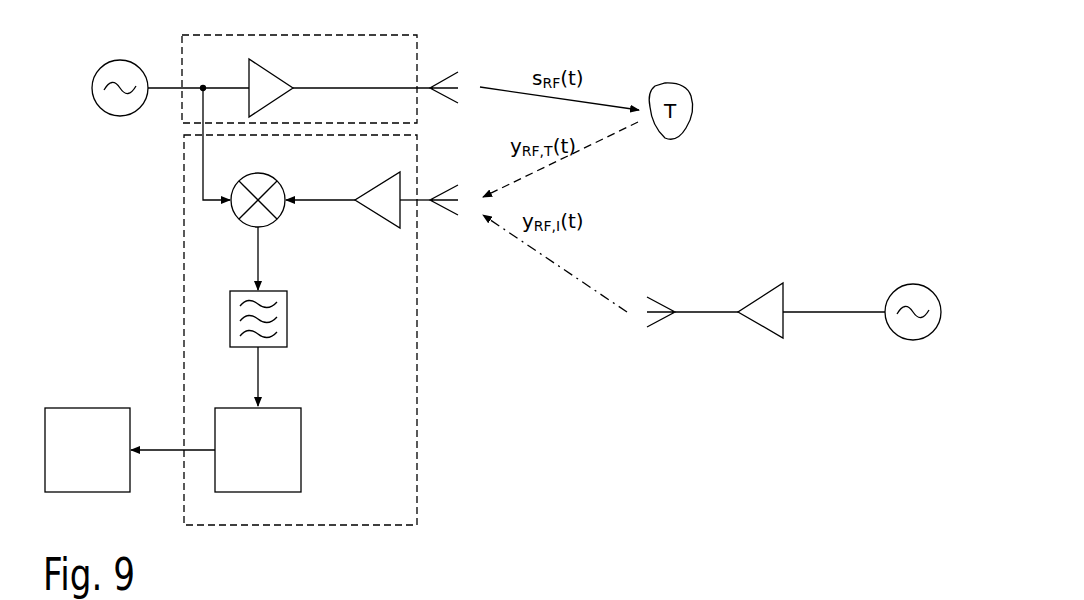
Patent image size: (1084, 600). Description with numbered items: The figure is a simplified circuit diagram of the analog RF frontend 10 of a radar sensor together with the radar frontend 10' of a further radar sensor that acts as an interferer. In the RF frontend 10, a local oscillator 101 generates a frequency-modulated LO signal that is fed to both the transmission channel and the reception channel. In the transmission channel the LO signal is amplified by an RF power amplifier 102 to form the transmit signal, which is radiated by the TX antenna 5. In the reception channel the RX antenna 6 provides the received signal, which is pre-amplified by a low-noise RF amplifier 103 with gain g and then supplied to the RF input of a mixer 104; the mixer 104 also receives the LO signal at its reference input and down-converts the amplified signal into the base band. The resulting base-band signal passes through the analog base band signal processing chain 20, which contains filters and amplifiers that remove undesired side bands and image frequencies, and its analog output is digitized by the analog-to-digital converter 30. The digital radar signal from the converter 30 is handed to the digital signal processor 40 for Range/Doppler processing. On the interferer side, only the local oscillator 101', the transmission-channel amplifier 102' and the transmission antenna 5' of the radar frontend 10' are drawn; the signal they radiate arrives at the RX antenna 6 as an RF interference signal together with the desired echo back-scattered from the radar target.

The RF frontend 10 is at (251, 268).
The local oscillator 101 is at (120, 67).
The RF power amplifier 102 is at (295, 80).
The TX antenna 5 is at (444, 63).
The mixer 104 is at (276, 177).
The RF amplifier 103 is at (389, 222).
The RX antenna 6 is at (447, 190).
The analog base band signal processing chain 20 is at (288, 311).
The analog-to-digital converter 30 is at (258, 450).
The digital signal processor 40 is at (87, 450).
The radar frontend 10' is at (803, 260).
The transmission antenna 5' is at (661, 288).
The amplifier 102' is at (763, 288).
The local oscillator 101' is at (915, 289).